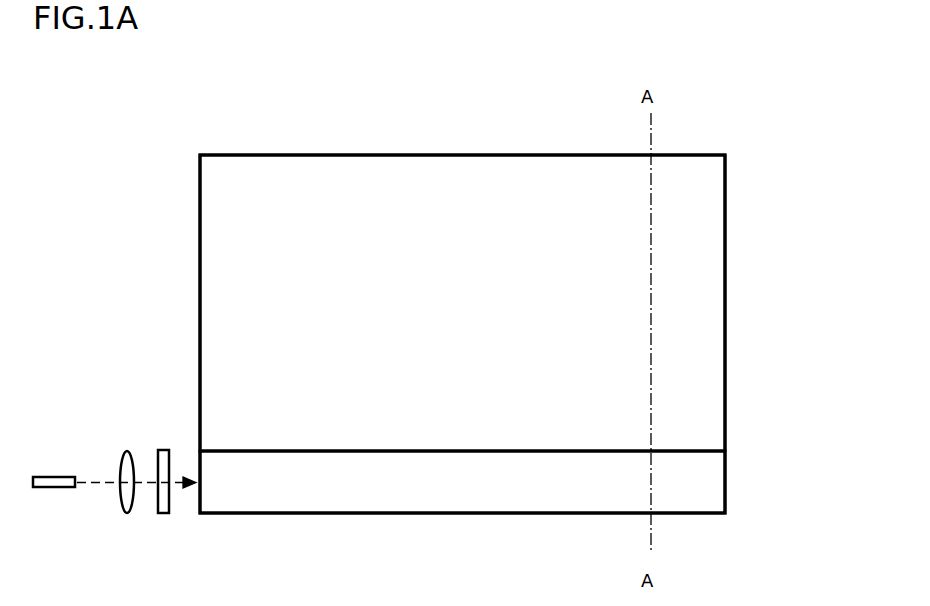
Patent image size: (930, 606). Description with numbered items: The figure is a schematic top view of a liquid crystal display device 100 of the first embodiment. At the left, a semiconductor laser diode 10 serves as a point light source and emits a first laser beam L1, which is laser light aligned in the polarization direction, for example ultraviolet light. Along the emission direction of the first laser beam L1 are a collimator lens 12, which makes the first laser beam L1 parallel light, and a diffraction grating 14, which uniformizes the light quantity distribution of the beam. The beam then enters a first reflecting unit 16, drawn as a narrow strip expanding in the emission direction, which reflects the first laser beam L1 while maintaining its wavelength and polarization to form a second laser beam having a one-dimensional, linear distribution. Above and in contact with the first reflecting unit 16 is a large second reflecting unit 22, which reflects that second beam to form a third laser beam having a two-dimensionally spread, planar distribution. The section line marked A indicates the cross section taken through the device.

The liquid crystal display device 100 is at (424, 118).
The second reflecting unit 22 is at (729, 320).
The first reflecting unit 16 is at (739, 489).
The semiconductor laser diode 10 is at (53, 476).
The first laser beam L1 is at (97, 475).
The collimator lens 12 is at (127, 450).
The diffraction grating 14 is at (165, 449).